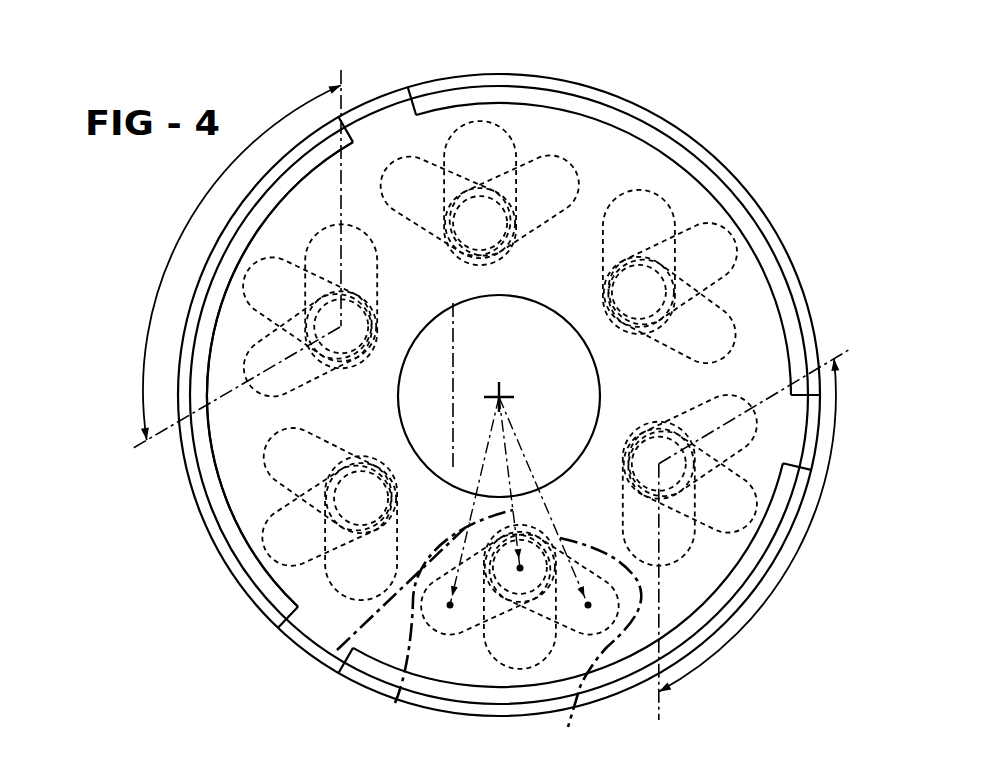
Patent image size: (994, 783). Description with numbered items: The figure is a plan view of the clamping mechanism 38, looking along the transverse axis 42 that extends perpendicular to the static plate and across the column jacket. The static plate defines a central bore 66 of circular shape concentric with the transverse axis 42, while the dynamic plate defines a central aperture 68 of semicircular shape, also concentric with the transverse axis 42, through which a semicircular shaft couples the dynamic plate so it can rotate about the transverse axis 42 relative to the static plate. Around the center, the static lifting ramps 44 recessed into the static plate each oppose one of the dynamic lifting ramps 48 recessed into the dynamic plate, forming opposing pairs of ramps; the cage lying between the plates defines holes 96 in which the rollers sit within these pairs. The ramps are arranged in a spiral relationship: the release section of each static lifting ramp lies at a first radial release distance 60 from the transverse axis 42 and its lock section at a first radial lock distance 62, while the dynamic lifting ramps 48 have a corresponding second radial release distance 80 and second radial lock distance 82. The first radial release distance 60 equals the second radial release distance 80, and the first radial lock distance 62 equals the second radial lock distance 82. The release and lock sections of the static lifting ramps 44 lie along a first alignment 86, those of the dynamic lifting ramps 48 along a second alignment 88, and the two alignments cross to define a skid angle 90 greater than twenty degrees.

The clamping mechanism 38 is at (728, 134).
The transverse axis 42 is at (501, 394).
The static lifting ramps 44 is at (760, 290).
The dynamic lifting ramps 48 is at (712, 195).
The first radial release distance 60 is at (335, 652).
The first radial lock distance 62 is at (395, 703).
The central bore 66 is at (601, 390).
The central aperture 68 is at (453, 373).
The second radial release distance 80 is at (280, 410).
The second radial lock distance 82 is at (568, 727).
The first alignment 86 is at (341, 72).
The second alignment 88 is at (148, 450).
The skid angle 90 is at (490, 388).
The holes 96 is at (748, 222).